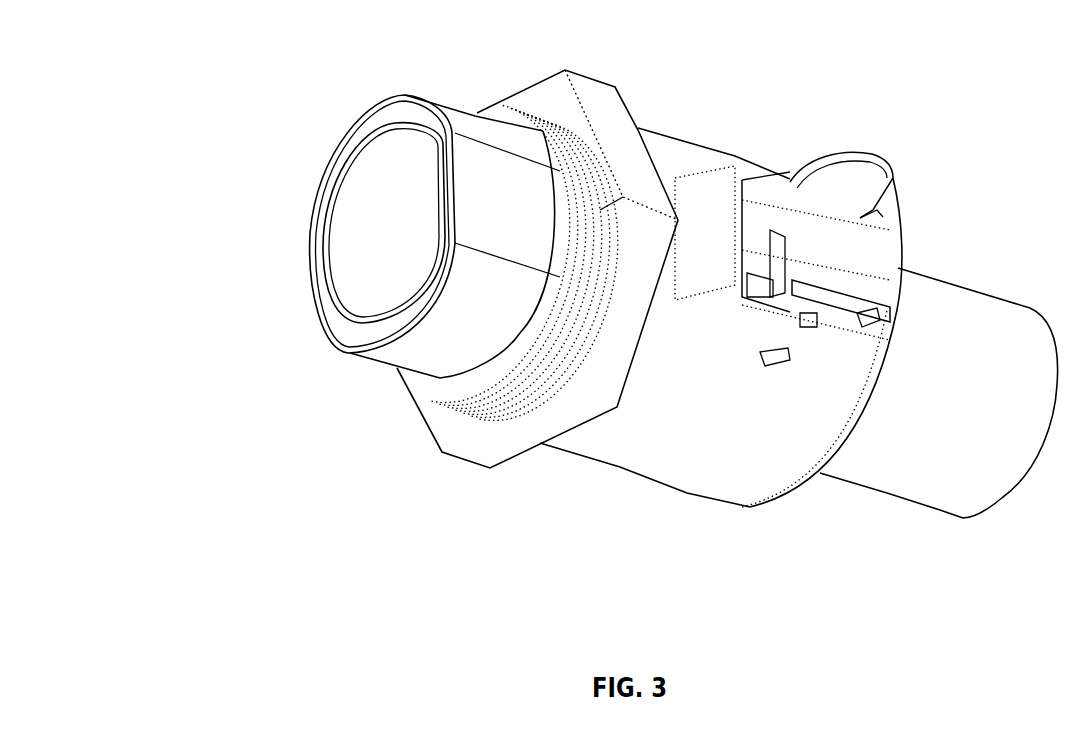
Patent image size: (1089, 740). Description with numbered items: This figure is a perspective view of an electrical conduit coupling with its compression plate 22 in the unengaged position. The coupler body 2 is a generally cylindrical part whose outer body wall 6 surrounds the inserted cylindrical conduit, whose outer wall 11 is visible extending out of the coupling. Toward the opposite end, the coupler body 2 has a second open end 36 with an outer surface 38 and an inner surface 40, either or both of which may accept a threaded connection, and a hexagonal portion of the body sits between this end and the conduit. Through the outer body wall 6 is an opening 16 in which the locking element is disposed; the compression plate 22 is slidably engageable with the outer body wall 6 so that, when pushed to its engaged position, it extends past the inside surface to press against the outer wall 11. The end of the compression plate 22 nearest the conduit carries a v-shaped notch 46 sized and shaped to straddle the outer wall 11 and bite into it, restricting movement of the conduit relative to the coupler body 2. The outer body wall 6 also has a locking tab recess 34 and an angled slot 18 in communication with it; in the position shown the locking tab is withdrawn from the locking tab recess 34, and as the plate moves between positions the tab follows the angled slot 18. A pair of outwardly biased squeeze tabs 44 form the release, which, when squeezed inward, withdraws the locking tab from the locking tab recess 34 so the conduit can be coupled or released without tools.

The coupler body 2 is at (522, 551).
The outer body wall 6 is at (668, 335).
The outer wall 11 is at (942, 472).
The opening 16 is at (750, 251).
The angled slot 18 is at (805, 318).
The compression plate 22 is at (816, 265).
The locking tab recess 34 is at (783, 360).
The second open end 36 is at (360, 239).
The outer surface 38 is at (415, 345).
The inner surface 40 is at (348, 288).
The squeeze tabs 44 is at (914, 250).
The v-shaped notch 46 is at (785, 278).